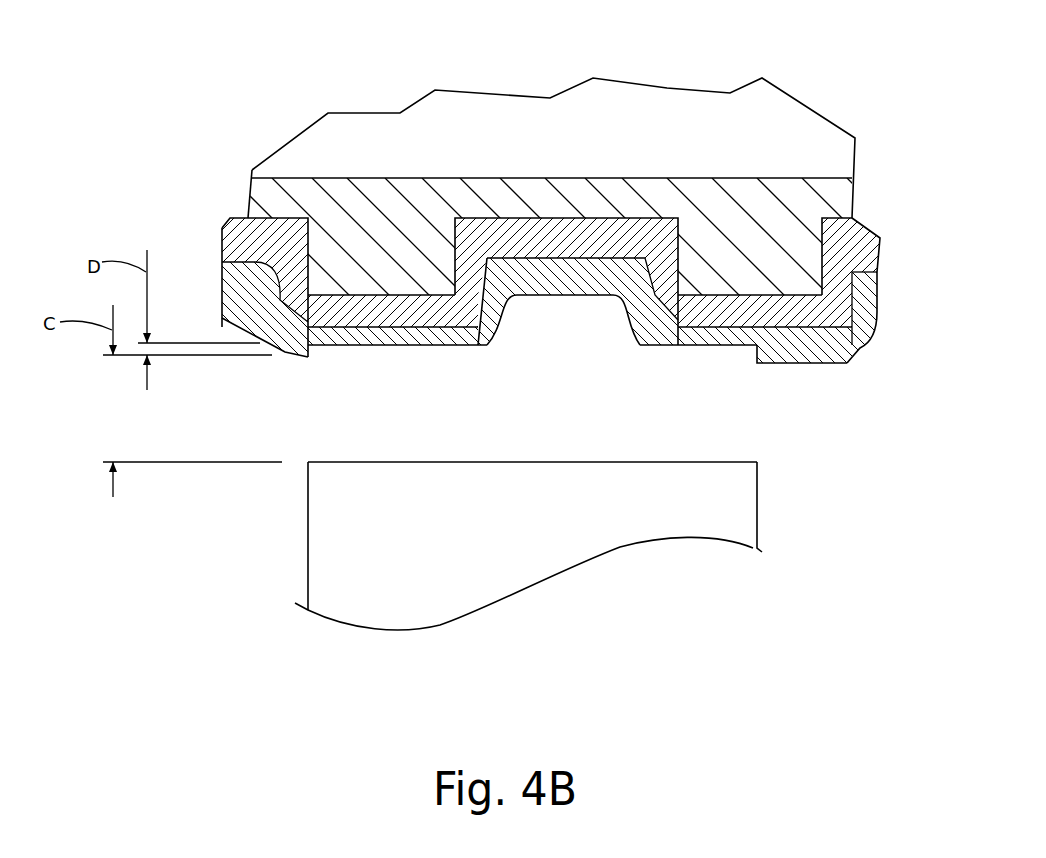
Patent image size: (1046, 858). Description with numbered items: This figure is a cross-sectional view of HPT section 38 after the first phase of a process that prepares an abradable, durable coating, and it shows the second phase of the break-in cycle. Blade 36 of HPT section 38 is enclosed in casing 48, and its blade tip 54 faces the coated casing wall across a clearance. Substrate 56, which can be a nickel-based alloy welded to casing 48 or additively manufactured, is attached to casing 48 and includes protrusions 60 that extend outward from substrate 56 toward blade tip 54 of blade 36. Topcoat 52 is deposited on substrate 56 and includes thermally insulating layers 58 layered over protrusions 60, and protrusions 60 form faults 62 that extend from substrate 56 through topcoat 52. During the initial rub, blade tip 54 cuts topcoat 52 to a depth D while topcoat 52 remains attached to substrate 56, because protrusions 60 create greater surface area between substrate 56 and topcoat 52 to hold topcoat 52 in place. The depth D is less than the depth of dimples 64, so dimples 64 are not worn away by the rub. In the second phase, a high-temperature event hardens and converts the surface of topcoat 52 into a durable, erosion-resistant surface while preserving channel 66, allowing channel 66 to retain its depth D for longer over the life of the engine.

The blade 36 is at (340, 540).
The HPT section 38 is at (120, 177).
The casing 48 is at (802, 150).
The topcoat 52 is at (210, 214).
The blade tip 54 is at (673, 461).
The substrate 56 is at (856, 200).
The thermally insulating layers 58 is at (880, 254).
The protrusions 60 is at (395, 310).
The faults 62 is at (292, 354).
The dimples 64 is at (243, 312).
The channel 66 is at (413, 347).